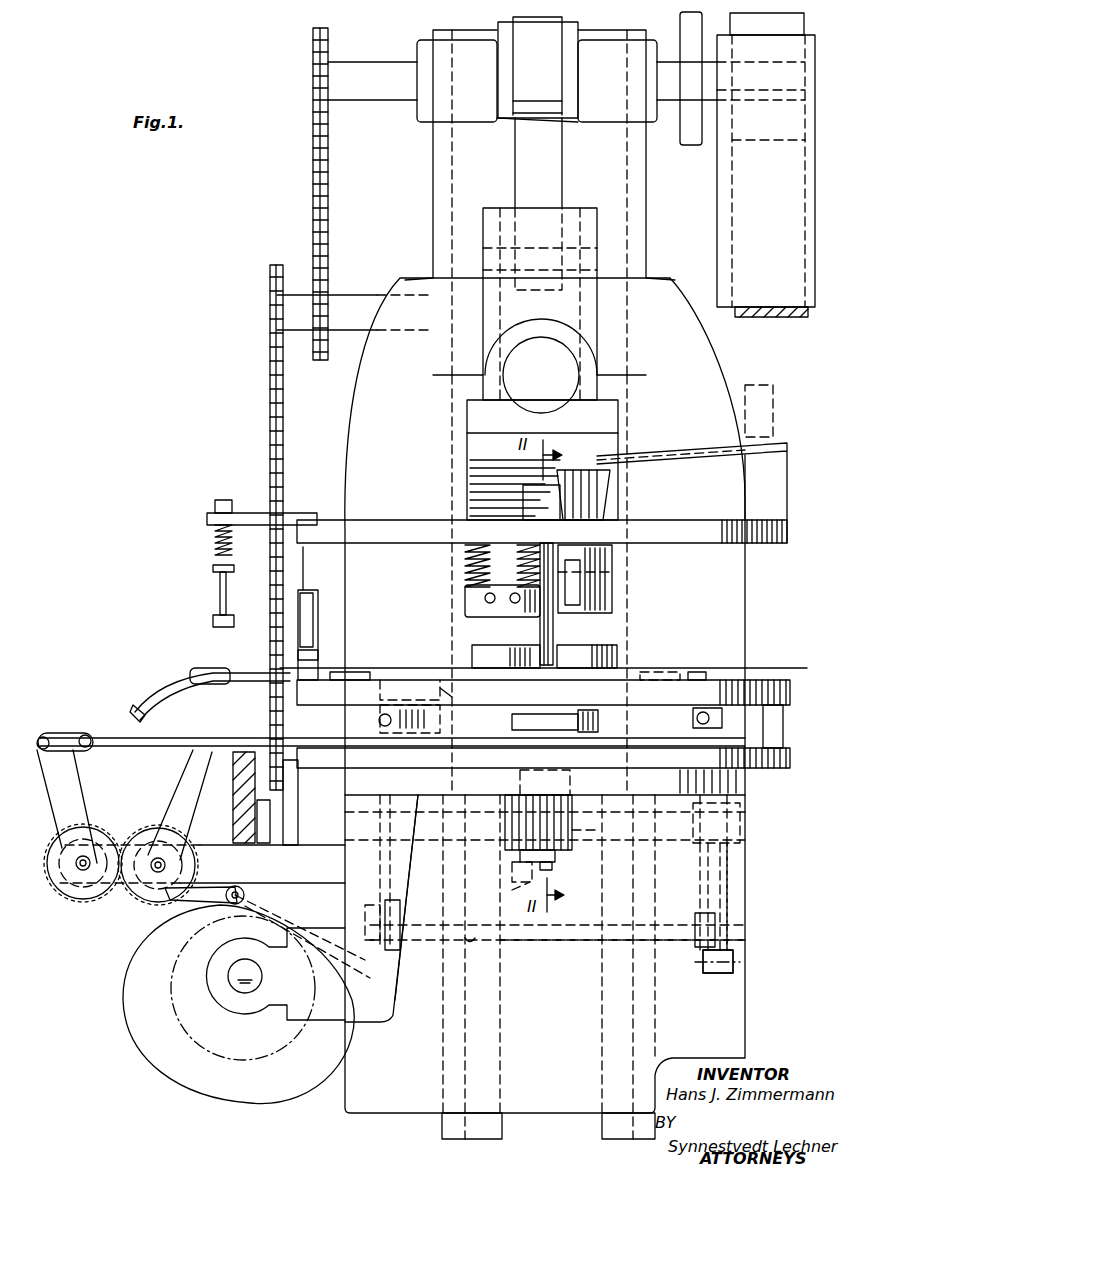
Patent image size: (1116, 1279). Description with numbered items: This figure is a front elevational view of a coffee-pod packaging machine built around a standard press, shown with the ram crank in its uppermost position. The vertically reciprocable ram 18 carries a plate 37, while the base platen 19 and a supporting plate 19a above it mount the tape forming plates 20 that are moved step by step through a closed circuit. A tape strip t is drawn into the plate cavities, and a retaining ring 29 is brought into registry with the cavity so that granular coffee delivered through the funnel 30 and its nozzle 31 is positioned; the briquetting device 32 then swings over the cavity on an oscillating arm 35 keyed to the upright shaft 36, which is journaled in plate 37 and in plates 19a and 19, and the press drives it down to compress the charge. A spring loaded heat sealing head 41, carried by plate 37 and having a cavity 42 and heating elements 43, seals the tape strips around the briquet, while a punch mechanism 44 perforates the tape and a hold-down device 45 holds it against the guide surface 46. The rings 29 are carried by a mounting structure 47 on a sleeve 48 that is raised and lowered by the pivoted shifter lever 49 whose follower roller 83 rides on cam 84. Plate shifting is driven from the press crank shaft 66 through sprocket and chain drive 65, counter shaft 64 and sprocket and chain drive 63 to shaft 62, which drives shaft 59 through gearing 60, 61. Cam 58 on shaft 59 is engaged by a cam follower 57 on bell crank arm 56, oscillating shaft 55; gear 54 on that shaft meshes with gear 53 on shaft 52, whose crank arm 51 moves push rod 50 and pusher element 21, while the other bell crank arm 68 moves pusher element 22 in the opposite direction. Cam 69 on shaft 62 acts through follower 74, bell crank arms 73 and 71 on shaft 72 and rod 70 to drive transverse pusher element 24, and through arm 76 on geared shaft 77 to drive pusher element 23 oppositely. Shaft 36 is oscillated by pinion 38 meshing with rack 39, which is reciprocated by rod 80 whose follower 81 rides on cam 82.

The ram 18 is at (605, 280).
The base platen 19 is at (790, 757).
The supporting plate 19a is at (790, 697).
The tape forming plate 20 is at (702, 672).
The pusher element 21 is at (636, 718).
The pusher element 22 is at (455, 695).
The pusher element 23 is at (382, 680).
The pusher element 24 is at (660, 672).
The retaining ring 29 is at (618, 634).
The delivery funnel 30 is at (608, 490).
The nozzle 31 is at (614, 572).
The briquetting device 32 is at (614, 597).
The oscillating arm 35 is at (580, 608).
The upright shaft 36 is at (540, 628).
The plate 37 is at (787, 522).
The pinion 38 is at (574, 818).
The rack 39 is at (512, 828).
The heat sealing head 41 is at (465, 592).
The cavity 42 is at (478, 617).
The electrical heating elements 43 is at (492, 596).
The punch mechanism 44 is at (320, 600).
The hold-down device 45 is at (220, 590).
The guide surface 46 is at (222, 682).
The mounting structure 47 is at (528, 647).
The sleeve 48 is at (545, 697).
The shifter lever 49 is at (520, 722).
The push rod 50 is at (156, 737).
The crank arm 51 is at (62, 772).
The shaft 52 is at (62, 898).
The gear 53 is at (90, 898).
The gear 54 is at (145, 898).
The shaft 55 is at (156, 860).
The bell crank arm 56 is at (198, 898).
The cam follower 57 is at (250, 893).
The cam 58 is at (123, 986).
The shaft 59 is at (235, 976).
The gearing 60 is at (268, 1053).
The gearing 61 is at (237, 766).
The shaft 62 is at (432, 850).
The sprocket and chain drive 63 is at (270, 450).
The counter shaft 64 is at (353, 297).
The sprocket and chain drive 65 is at (313, 174).
The crank shaft 66 is at (368, 95).
The bell crank arm 68 is at (183, 786).
The cam 69 is at (730, 883).
The rod 70 is at (700, 725).
The bell crank arm 71 is at (705, 851).
The shaft 72 is at (573, 945).
The bell crank arm 73 is at (705, 972).
The follower 74 is at (735, 975).
The arm 76 is at (378, 878).
The shaft 77 is at (470, 946).
The rod 80 is at (598, 833).
The follower 81 is at (574, 782).
The cam 82 is at (555, 866).
The follower roller 83 is at (514, 880).
The cam 84 is at (520, 893).
The tape strip t is at (785, 665).